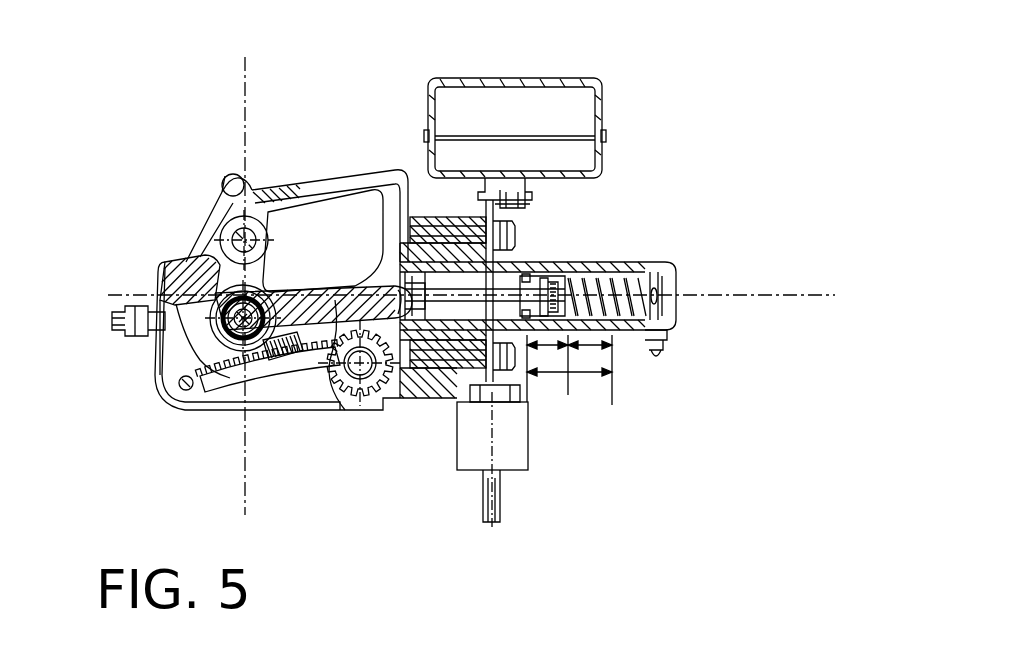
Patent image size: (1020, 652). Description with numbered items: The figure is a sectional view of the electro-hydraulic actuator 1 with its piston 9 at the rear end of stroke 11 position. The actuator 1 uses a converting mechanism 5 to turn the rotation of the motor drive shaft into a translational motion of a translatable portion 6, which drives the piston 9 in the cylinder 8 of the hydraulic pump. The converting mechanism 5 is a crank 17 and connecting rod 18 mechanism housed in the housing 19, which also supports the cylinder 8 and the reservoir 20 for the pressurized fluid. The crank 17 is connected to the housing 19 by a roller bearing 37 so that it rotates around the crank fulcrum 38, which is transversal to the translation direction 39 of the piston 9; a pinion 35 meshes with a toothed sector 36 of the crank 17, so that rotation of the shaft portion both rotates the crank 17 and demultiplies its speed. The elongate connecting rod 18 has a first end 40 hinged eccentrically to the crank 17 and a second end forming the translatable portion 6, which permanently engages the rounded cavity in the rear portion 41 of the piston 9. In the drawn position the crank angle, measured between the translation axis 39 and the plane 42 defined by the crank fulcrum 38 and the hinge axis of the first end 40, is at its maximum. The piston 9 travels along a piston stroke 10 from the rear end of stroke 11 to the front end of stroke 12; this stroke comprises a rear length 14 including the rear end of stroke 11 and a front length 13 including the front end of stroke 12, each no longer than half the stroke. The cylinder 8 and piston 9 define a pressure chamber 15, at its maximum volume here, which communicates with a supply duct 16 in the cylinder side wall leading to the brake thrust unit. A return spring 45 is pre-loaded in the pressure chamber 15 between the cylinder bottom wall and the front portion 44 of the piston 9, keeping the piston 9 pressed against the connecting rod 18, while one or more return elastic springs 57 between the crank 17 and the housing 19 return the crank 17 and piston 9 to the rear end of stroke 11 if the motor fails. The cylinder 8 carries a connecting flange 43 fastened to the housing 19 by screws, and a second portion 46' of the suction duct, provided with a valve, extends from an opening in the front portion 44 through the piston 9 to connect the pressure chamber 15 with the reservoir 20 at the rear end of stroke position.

The electro-hydraulic actuator 1 is at (627, 165).
The converting mechanism 5 is at (307, 237).
The translatable portion 6 is at (432, 375).
The cylinder 8 is at (610, 264).
The piston 9 is at (527, 274).
The piston stroke 10 is at (570, 372).
The rear end of stroke 11 is at (527, 390).
The front end of stroke 12 is at (612, 380).
The front length 13 is at (612, 346).
The rear length 14 is at (546, 345).
The pressure chamber 15 is at (657, 270).
The supply duct 16 is at (680, 290).
The crank 17 is at (222, 272).
The connecting rod 18 is at (372, 230).
The housing 19 is at (320, 387).
The reservoir 20 is at (604, 118).
The pinion 35 is at (385, 390).
The toothed sector 36 is at (283, 372).
The roller bearing 37 is at (262, 215).
The crank fulcrum 38 is at (232, 236).
The translation direction 39 is at (743, 295).
The first end 40 is at (215, 355).
The rear portion 41 is at (437, 198).
The plane 42 is at (245, 88).
The connecting flange 43 is at (478, 205).
The front portion 44 is at (600, 266).
The return spring 45 is at (677, 280).
The second portion of the suction duct 46' is at (469, 450).
The return elastic spring 57 is at (298, 362).